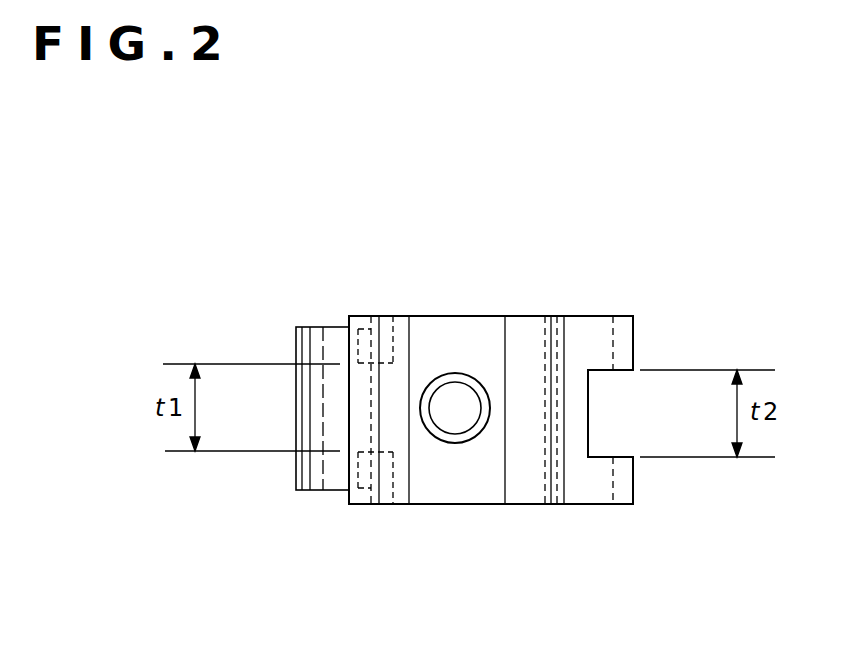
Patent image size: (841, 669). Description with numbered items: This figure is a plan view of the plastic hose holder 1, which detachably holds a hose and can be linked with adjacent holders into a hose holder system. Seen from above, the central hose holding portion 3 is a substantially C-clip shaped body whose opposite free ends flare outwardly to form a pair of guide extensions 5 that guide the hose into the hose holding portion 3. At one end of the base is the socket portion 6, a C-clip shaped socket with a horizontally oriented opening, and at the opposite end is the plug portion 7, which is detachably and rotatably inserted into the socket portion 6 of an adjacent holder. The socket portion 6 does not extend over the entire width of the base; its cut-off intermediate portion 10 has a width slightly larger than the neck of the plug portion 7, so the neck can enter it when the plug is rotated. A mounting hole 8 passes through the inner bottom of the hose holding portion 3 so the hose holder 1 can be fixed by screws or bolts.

The hose holder 1 is at (562, 277).
The hose holding portion 3 is at (457, 483).
The guide extensions 5 is at (400, 505).
The socket portion 6 is at (623, 490).
The plug portion 7 is at (313, 428).
The mounting hole 8 is at (453, 398).
The cut-off intermediate portion 10 is at (603, 400).